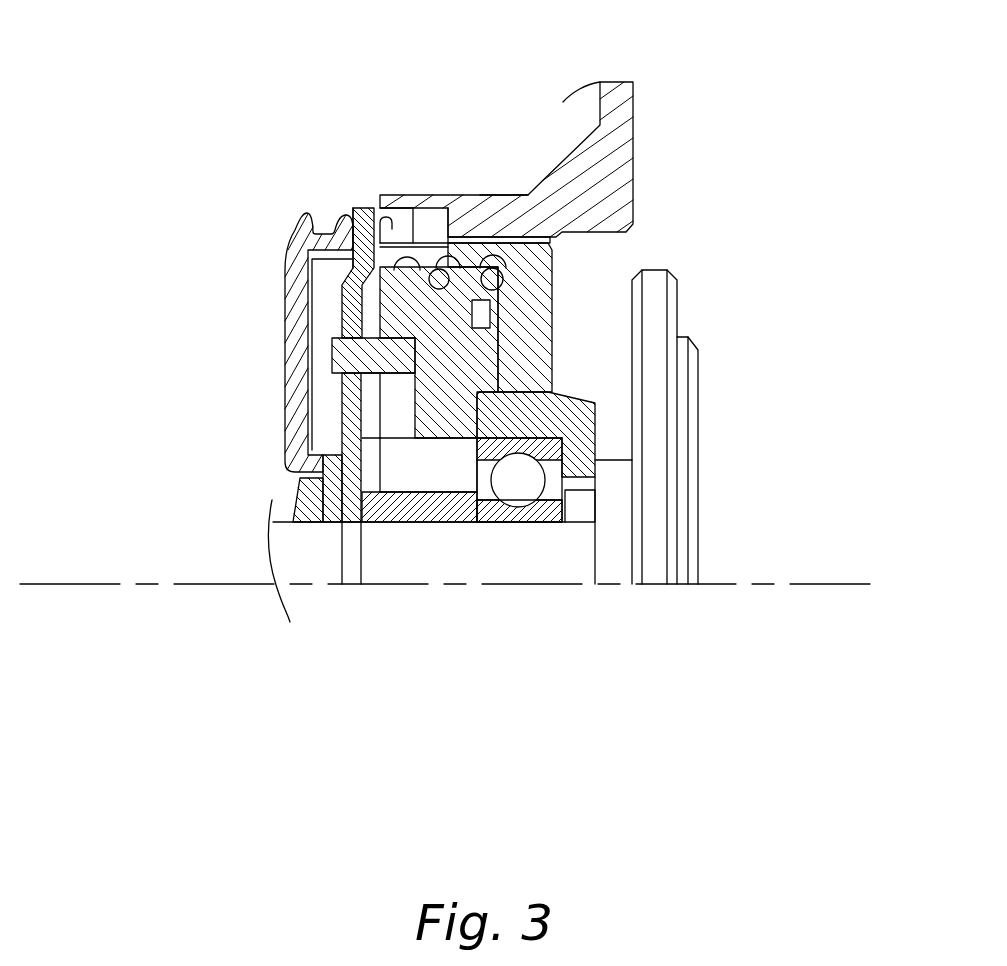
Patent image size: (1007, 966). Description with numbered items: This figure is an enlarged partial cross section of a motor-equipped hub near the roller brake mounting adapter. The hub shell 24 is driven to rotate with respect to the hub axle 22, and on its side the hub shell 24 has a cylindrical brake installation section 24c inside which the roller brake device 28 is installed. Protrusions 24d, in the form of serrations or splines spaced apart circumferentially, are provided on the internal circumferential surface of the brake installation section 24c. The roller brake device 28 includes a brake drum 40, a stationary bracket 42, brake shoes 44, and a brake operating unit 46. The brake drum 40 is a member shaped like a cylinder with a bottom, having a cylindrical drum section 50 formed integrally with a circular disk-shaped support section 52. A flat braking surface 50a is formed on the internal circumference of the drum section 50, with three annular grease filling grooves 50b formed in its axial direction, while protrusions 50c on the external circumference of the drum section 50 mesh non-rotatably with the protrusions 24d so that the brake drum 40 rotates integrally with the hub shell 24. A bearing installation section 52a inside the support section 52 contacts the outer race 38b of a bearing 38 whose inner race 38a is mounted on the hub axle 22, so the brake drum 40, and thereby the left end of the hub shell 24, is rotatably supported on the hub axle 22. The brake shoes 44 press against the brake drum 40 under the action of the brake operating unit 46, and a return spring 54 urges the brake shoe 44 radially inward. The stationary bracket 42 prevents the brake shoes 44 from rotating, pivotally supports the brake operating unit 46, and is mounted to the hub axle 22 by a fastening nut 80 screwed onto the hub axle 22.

The hub axle 22 is at (432, 570).
The hub shell 24 is at (634, 110).
The brake installation section 24c is at (499, 195).
The protrusions 24d is at (455, 195).
The roller brake device 28 is at (357, 187).
The bearing 38 is at (540, 522).
The inner race 38a is at (497, 522).
The outer race 38b is at (477, 505).
The brake drum 40 is at (551, 300).
The stationary bracket 42 is at (293, 236).
The brake shoes 44 is at (390, 312).
The brake operating unit 46 is at (393, 473).
The drum section 50 is at (410, 243).
The braking surface 50a is at (552, 240).
The grease filling grooves 50b is at (353, 230).
The protrusions 50c is at (522, 237).
The support section 52 is at (547, 352).
The bearing installation section 52a is at (565, 492).
The return spring 54 is at (400, 258).
The fastening nut 80 is at (302, 508).